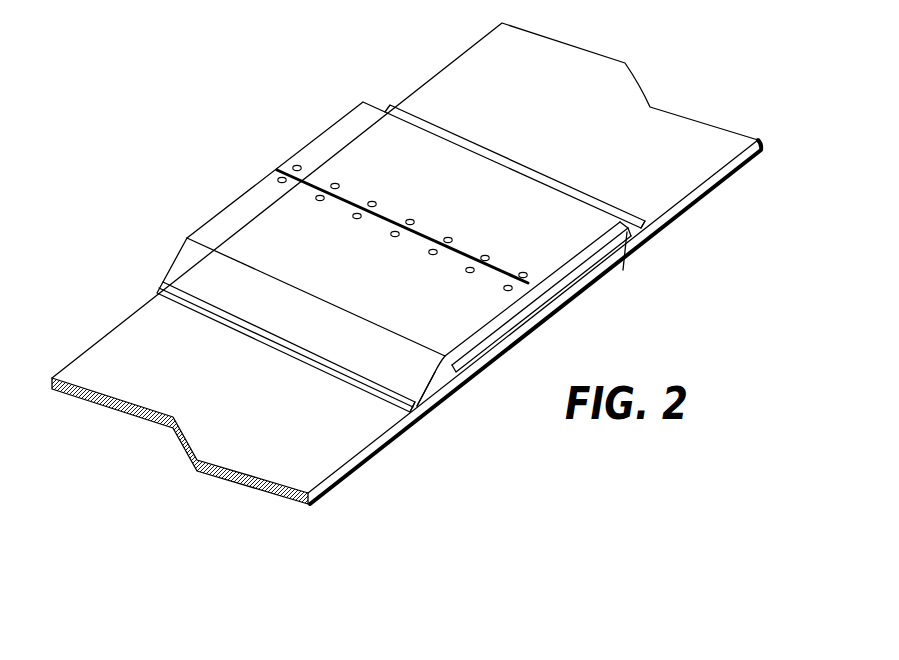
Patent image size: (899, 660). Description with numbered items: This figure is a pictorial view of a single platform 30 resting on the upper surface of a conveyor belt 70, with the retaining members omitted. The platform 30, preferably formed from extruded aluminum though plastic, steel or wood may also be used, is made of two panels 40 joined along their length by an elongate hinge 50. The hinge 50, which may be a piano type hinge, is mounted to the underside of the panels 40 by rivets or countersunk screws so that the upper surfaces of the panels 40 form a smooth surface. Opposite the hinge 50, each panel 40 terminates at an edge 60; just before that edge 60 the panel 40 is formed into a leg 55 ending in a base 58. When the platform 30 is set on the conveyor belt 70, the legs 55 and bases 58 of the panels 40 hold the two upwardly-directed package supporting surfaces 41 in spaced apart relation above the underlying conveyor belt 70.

The platform 30 is at (391, 225).
The panel 40 is at (552, 243).
The package supporting surface 41 is at (242, 213).
The elongate hinge 50 is at (315, 177).
The leg 55 is at (630, 281).
The base 58 is at (647, 227).
The edge 60 is at (647, 225).
The conveyor belt 70 is at (698, 118).